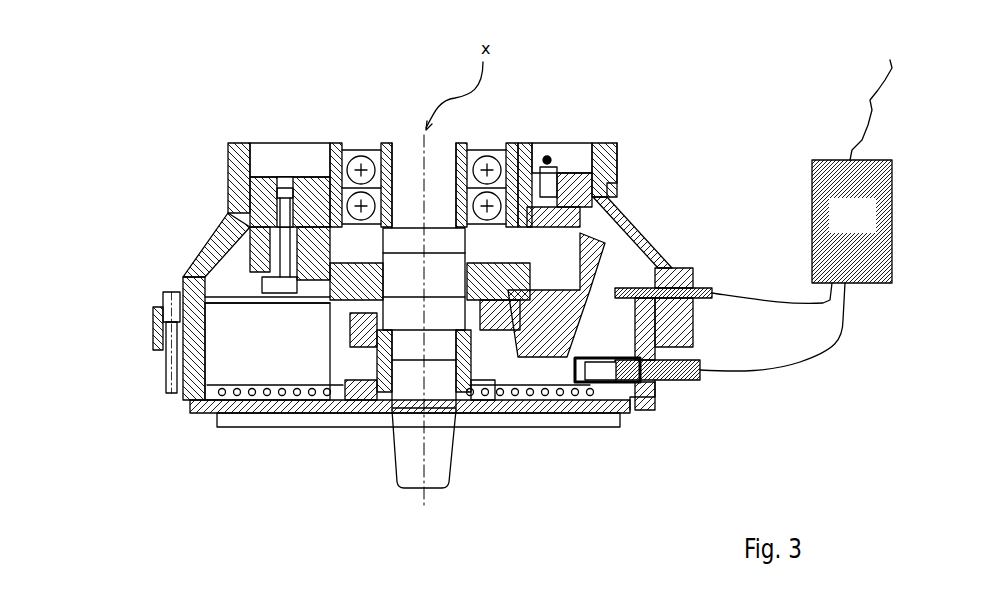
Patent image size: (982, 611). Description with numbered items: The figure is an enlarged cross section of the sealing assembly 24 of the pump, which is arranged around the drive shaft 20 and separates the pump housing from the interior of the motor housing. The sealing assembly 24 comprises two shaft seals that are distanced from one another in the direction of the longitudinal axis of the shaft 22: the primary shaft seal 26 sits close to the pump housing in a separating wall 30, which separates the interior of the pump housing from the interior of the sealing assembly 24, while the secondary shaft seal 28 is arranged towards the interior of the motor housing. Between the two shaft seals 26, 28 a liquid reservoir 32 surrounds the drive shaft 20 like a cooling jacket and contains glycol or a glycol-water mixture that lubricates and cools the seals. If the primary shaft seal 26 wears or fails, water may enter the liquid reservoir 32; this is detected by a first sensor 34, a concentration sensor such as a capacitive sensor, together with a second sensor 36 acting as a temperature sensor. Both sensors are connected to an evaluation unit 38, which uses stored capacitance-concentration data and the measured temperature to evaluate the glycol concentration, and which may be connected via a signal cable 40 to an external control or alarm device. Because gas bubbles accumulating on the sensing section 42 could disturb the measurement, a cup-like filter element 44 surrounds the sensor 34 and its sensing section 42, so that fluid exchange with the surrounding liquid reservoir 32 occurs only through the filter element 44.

The drive shaft 20 is at (403, 147).
The shaft 22 is at (437, 478).
The sealing assembly 24 is at (130, 307).
The primary shaft seal 26 is at (377, 385).
The secondary shaft seal 28 is at (480, 392).
The separating wall 30 is at (272, 428).
The liquid reservoir 32 is at (247, 355).
The concentration sensor 34 is at (690, 381).
The temperature sensor 36 is at (702, 278).
The evaluation unit 38 is at (852, 221).
The signal cable 40 is at (870, 90).
The sensing section 42 is at (603, 370).
The filter element 44 is at (585, 398).